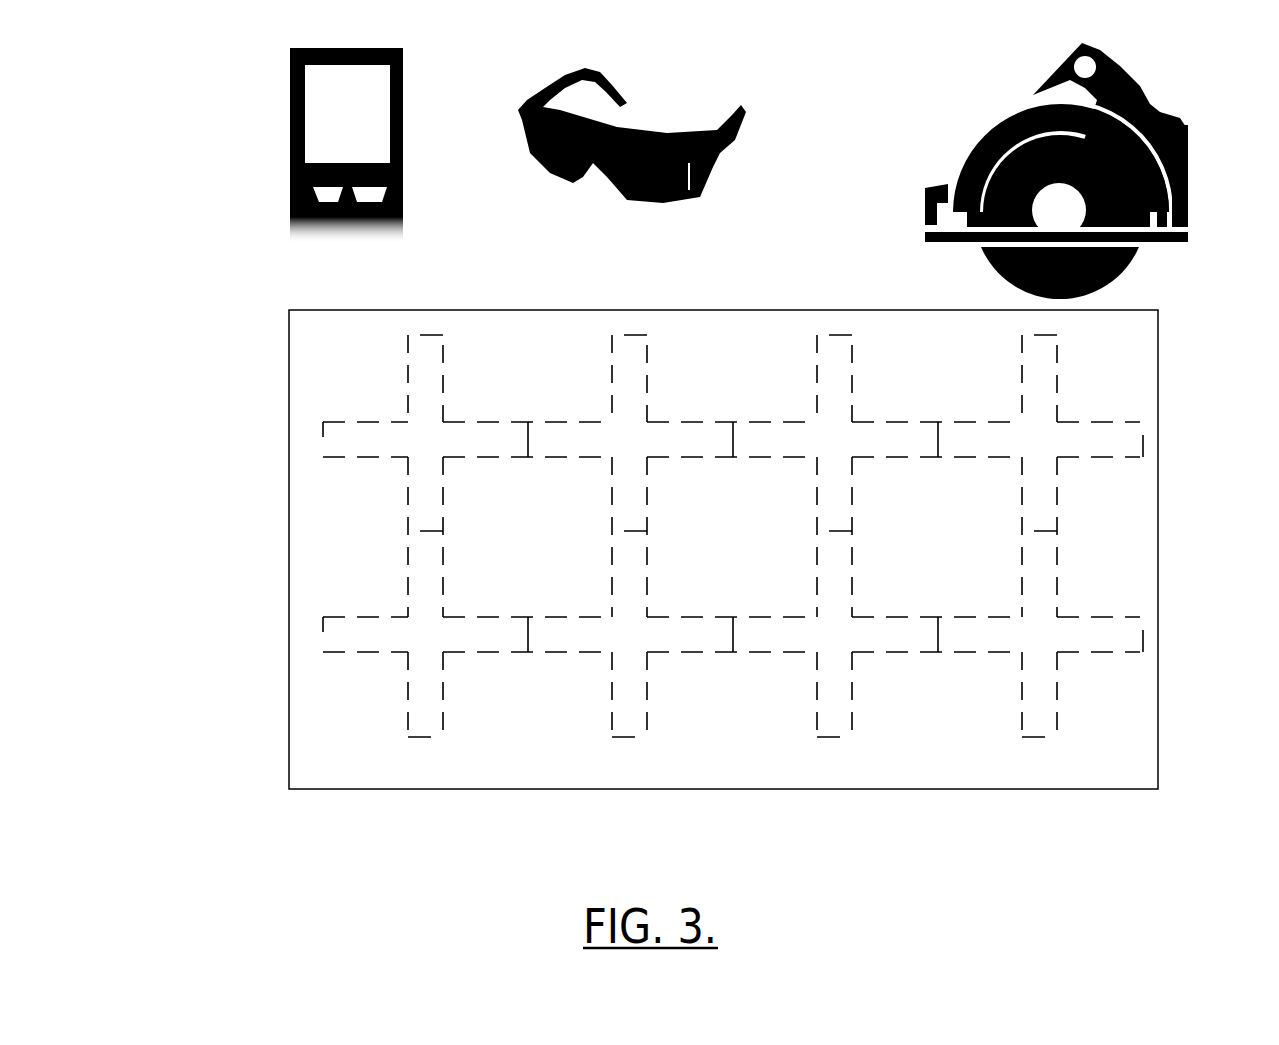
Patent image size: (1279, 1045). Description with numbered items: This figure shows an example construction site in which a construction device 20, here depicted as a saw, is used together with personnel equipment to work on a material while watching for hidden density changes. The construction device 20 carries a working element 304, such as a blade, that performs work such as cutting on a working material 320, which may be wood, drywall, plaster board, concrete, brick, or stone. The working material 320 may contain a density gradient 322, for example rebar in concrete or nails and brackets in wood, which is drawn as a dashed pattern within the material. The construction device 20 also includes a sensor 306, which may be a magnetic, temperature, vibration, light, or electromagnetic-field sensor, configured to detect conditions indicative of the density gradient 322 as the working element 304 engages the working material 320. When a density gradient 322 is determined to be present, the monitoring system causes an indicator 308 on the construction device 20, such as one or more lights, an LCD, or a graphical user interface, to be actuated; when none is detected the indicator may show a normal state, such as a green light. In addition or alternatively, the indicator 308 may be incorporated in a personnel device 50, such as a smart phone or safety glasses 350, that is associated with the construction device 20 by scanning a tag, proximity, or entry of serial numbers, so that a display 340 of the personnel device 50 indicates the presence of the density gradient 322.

The construction device 20 is at (1041, 171).
The personnel device 50 is at (307, 145).
The working element 304 is at (1120, 278).
The sensor 306 is at (1005, 228).
The indicator 308 is at (1120, 122).
The working material 320 is at (666, 549).
The density gradient 322 is at (659, 536).
The display 340 is at (300, 115).
The safety glasses 350 is at (606, 114).